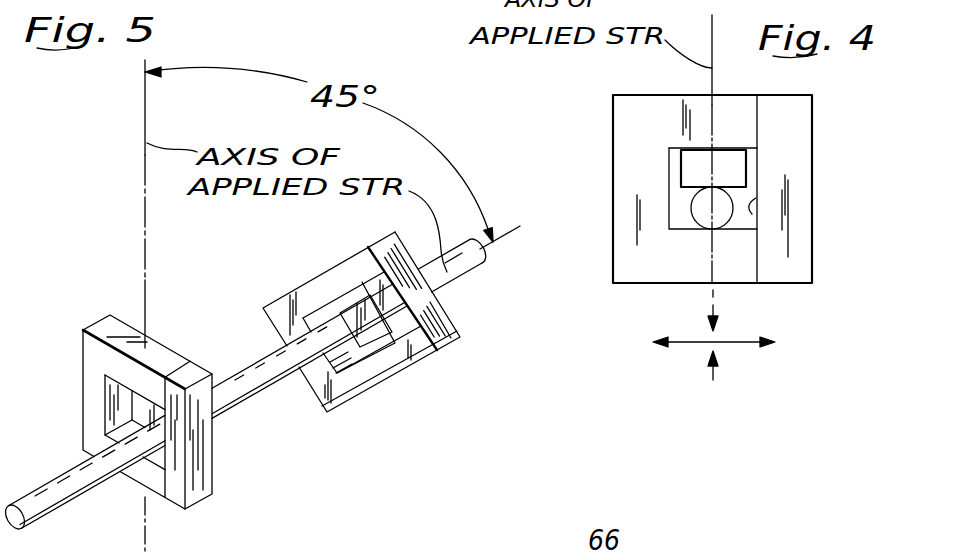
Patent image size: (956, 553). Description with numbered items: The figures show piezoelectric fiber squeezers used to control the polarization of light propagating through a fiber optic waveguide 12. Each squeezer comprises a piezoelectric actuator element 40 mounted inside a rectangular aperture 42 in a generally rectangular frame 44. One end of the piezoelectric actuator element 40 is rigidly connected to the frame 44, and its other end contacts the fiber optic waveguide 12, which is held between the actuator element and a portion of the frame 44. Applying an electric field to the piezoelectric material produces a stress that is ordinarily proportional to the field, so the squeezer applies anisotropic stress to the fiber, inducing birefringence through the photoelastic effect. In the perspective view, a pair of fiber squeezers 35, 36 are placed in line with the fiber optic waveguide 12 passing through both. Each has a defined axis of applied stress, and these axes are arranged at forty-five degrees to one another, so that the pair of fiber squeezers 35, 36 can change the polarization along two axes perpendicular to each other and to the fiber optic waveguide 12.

In FIG. 5, the fiber optic waveguide 12 is at (247, 369).
In FIG. 4, the fiber optic waveguide 12 is at (692, 214).
In FIG. 5, the fiber squeezer 35 is at (232, 480).
In FIG. 5, the fiber squeezer 36 is at (452, 362).
In FIG. 5, the piezoelectric actuator element 40 is at (123, 403).
In FIG. 4, the piezoelectric actuator element 40 is at (680, 165).
In FIG. 5, the rectangular aperture 42 is at (165, 465).
In FIG. 4, the rectangular aperture 42 is at (753, 210).
In FIG. 5, the frame 44 is at (215, 437).
In FIG. 4, the frame 44 is at (613, 233).